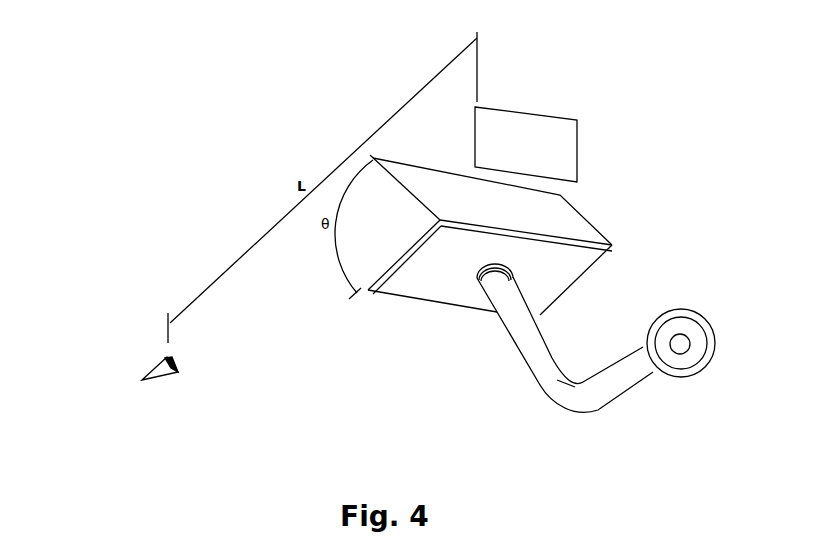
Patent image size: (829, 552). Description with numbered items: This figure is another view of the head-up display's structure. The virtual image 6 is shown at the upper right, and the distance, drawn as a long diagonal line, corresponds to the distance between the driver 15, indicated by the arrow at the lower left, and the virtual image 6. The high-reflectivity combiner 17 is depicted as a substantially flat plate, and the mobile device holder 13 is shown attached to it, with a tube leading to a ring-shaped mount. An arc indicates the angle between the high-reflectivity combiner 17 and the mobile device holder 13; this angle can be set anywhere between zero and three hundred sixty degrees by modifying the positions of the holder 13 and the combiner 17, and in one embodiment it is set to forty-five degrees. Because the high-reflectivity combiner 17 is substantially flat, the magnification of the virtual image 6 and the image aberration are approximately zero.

The virtual image 6 is at (578, 148).
The mobile device holder 13 is at (585, 277).
The driver 15 is at (155, 367).
The high-reflectivity combiner 17 is at (591, 220).